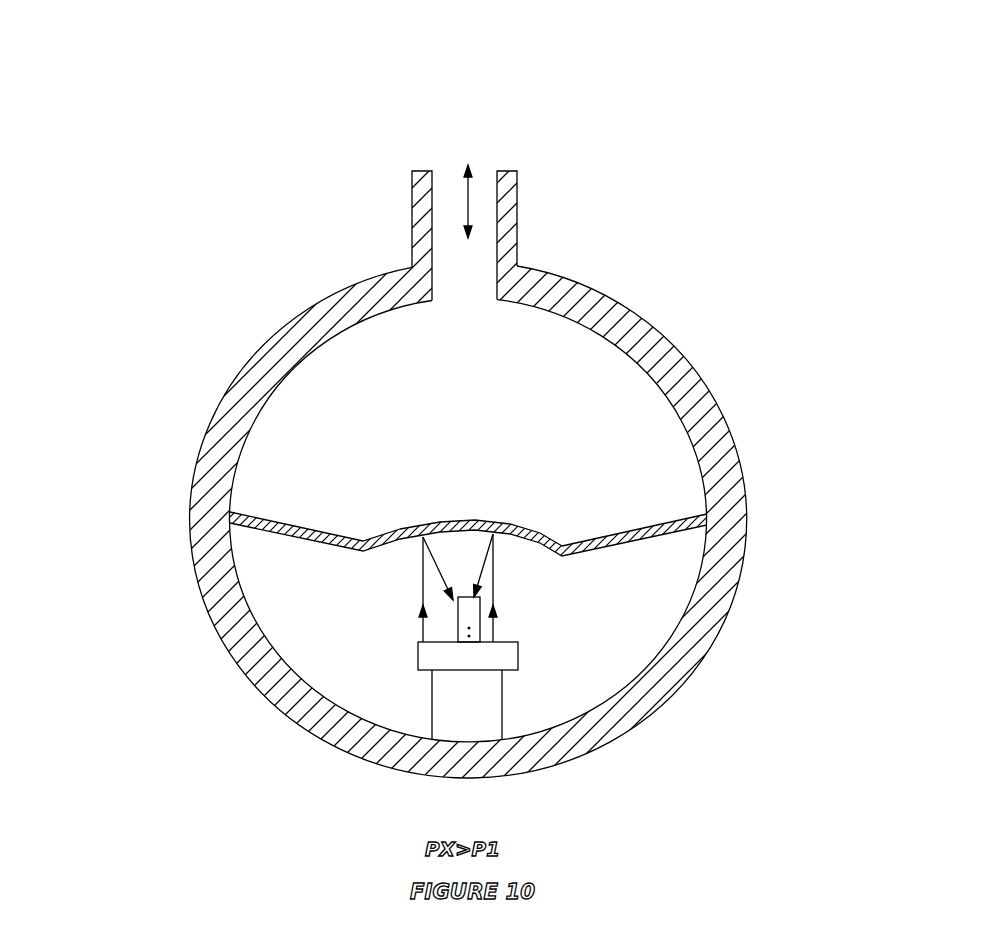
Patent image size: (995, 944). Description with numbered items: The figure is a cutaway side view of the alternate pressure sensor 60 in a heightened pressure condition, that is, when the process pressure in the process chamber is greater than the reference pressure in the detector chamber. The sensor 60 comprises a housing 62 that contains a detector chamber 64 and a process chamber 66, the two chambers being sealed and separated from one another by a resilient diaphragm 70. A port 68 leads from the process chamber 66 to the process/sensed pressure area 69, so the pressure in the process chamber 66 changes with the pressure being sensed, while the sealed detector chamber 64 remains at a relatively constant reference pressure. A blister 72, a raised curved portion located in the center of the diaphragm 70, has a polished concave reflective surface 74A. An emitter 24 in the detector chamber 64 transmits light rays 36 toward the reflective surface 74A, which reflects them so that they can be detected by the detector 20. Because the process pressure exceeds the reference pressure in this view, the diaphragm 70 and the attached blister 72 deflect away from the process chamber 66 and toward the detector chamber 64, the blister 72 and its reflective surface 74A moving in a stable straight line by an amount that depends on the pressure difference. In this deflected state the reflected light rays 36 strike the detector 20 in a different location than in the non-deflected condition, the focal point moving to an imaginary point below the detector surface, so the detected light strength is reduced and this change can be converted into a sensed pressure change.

The alternate pressure sensor 60 is at (458, 418).
The housing 62 is at (425, 474).
The detector chamber 64 is at (237, 694).
The process chamber 66 is at (254, 362).
The port 68 is at (389, 231).
The process/sensed pressure area 69 is at (660, 143).
The diaphragm 70 is at (547, 540).
The blister 72 is at (605, 426).
The reflective surface 74A is at (539, 649).
The detector 20 is at (305, 497).
The emitter 24 is at (548, 737).
The light rays 36 is at (304, 599).